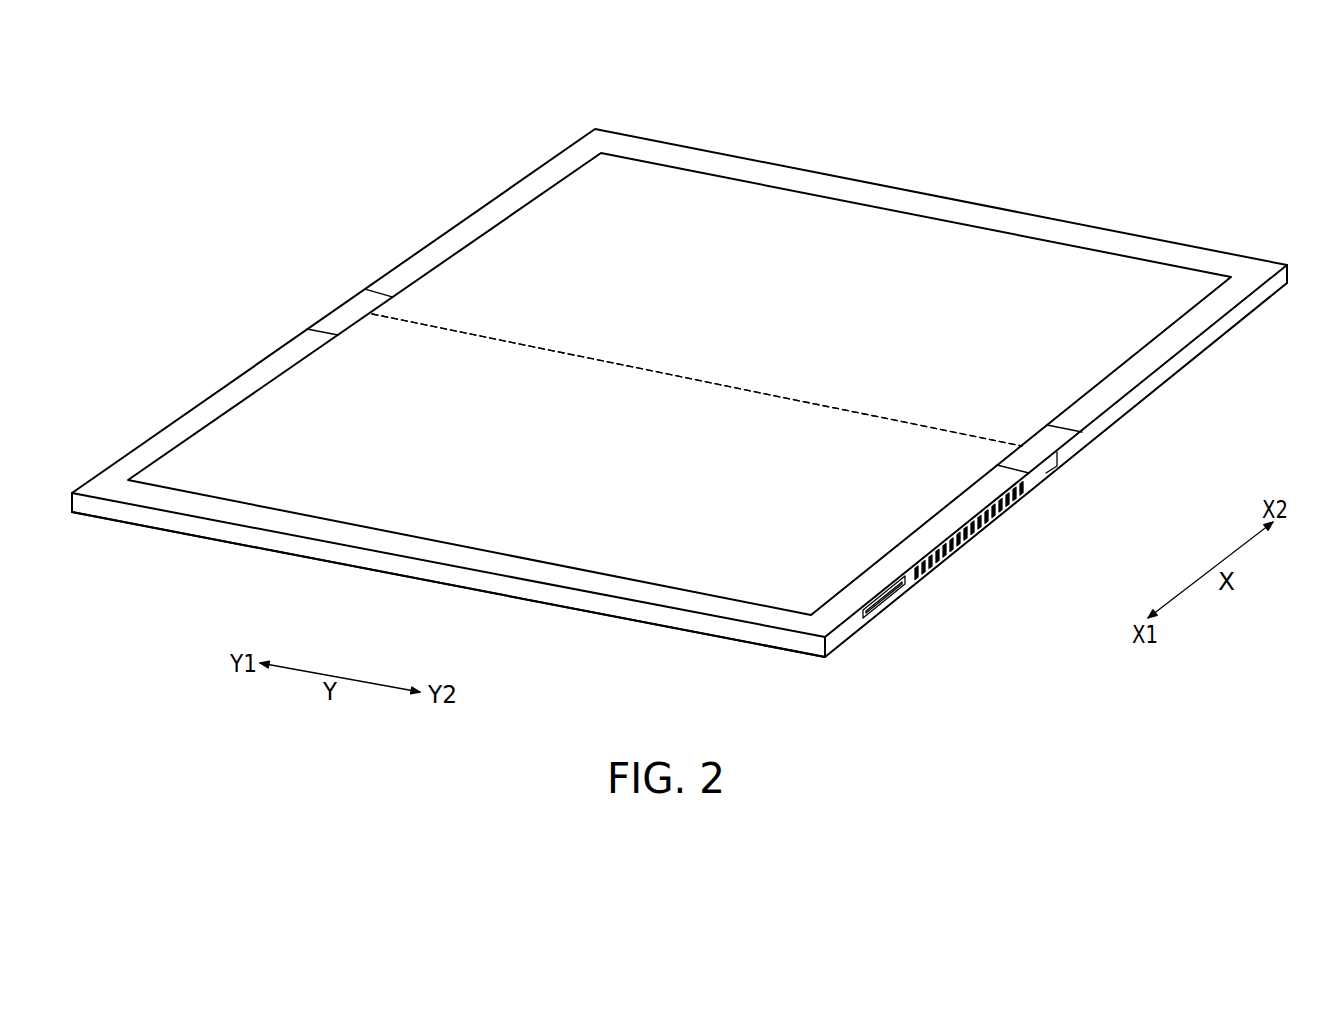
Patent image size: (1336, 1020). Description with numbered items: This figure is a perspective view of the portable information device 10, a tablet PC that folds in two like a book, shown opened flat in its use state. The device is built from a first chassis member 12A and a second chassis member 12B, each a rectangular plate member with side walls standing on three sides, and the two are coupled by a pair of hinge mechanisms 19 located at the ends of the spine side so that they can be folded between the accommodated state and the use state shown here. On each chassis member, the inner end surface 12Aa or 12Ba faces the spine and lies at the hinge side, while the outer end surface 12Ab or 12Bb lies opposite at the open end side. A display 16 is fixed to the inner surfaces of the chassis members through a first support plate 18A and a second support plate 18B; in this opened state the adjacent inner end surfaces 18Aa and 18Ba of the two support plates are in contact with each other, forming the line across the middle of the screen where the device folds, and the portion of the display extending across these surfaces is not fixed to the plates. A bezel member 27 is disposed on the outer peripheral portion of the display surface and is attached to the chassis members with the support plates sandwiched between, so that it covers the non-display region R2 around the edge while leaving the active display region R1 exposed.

The portable information device 10 is at (195, 143).
The first chassis member 12A is at (212, 390).
The second chassis member 12B is at (478, 205).
The inner end surface 12Aa is at (1065, 457).
The outer end surface 12Ab is at (568, 600).
The inner end surface 12Ba is at (1058, 452).
The outer end surface 12Bb is at (1291, 268).
The display 16 is at (739, 198).
The first support plate 18A is at (723, 568).
The second support plate 18B is at (839, 232).
The inner end surface 18Aa is at (623, 363).
The inner end surface 18Ba is at (650, 370).
The hinge mechanism 19 is at (343, 310).
The bezel member 27 is at (1125, 383).
The display region R1 is at (352, 513).
The non-display region R2 is at (938, 205).